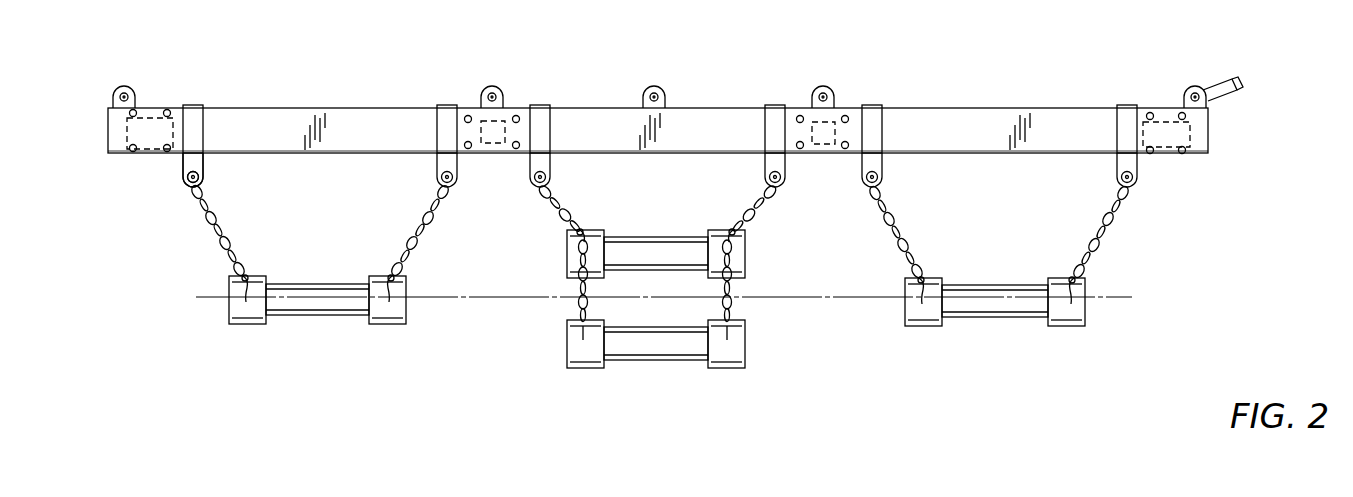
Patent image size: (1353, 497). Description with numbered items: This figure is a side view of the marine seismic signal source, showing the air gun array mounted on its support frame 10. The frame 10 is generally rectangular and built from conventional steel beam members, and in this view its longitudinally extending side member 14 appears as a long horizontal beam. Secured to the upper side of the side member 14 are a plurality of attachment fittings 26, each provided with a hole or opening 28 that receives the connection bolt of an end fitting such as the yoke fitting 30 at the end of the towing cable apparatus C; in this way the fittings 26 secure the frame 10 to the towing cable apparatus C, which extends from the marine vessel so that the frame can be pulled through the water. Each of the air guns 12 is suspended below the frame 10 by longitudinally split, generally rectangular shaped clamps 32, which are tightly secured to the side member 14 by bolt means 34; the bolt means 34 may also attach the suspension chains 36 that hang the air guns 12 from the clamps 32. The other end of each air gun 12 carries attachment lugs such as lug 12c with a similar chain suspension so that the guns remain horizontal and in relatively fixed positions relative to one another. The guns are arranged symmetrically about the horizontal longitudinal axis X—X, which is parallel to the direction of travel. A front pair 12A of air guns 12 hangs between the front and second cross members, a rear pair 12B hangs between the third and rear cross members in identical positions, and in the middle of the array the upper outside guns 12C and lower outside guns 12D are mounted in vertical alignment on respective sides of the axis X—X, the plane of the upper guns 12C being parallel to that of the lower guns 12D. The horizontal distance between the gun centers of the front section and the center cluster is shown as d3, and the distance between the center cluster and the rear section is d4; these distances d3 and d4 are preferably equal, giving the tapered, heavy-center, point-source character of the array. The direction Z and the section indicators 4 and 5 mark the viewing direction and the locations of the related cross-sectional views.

The support frame 10 is at (658, 96).
The air gun 12 is at (308, 286).
The front pair of air guns 12A is at (1070, 320).
The rear pair of air guns 12B is at (311, 293).
The upper outside air guns 12C is at (741, 249).
The lower outside air guns 12D is at (740, 343).
The attachment lug 12c is at (392, 296).
The side member 14 is at (1065, 120).
The attachment fitting 26 is at (758, 76).
The hole 28 is at (822, 93).
The yoke fitting 30 is at (1205, 82).
The clamp 32 is at (194, 118).
The bolt means 34 is at (183, 182).
The suspension chain 36 is at (222, 213).
The towing cable apparatus C is at (1232, 90).
The longitudinal axis X— X is at (663, 297).
The direction Z is at (1156, 262).
The horizontal distance d3 is at (655, 428).
The horizontal distance d4 is at (316, 327).
The section line 4- 4 is at (518, 50).
The section line 5- 5 is at (178, 48).